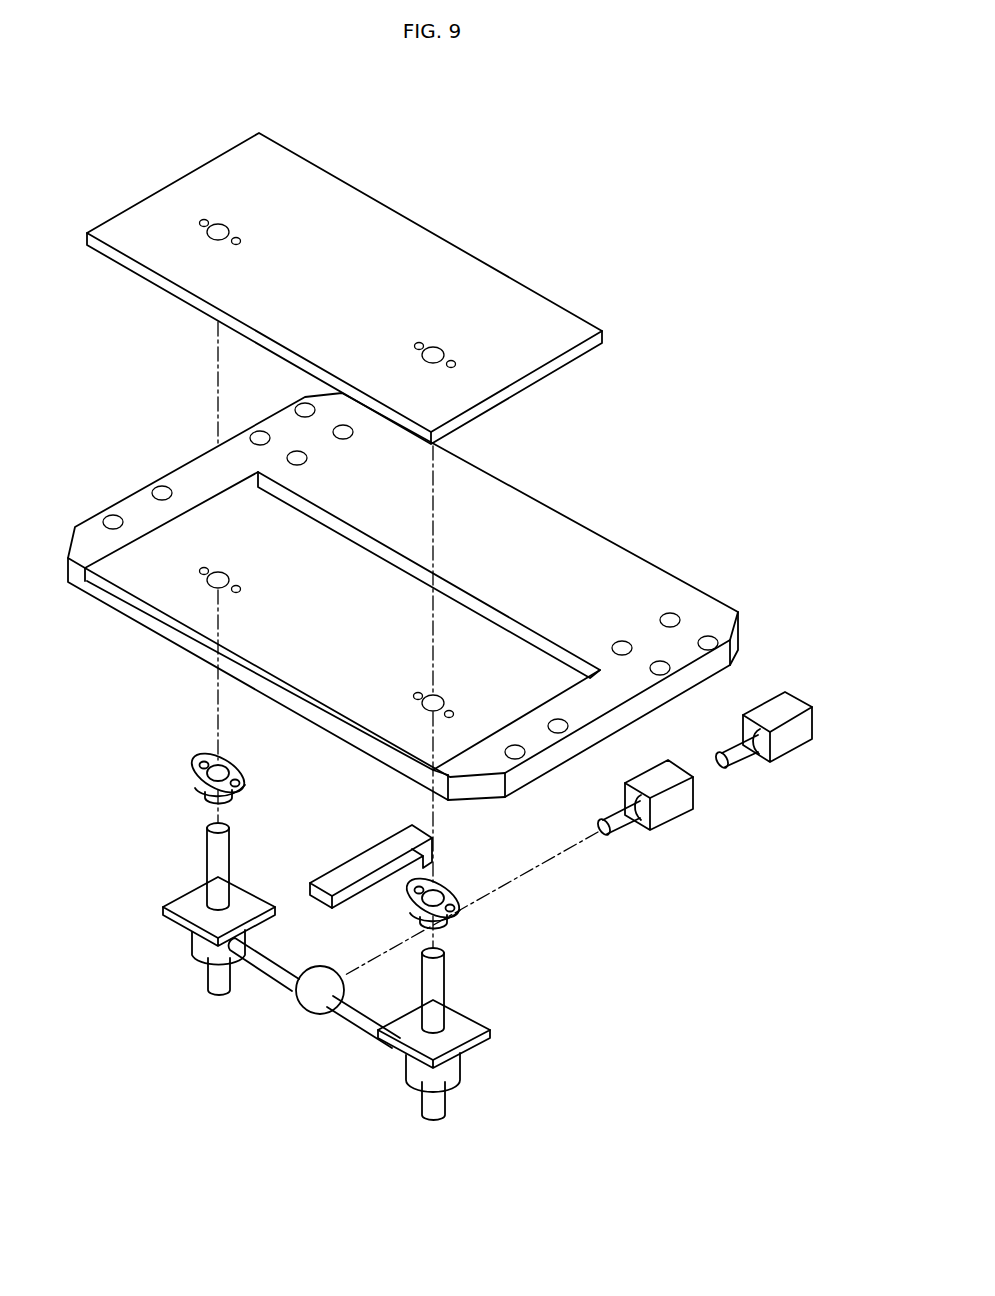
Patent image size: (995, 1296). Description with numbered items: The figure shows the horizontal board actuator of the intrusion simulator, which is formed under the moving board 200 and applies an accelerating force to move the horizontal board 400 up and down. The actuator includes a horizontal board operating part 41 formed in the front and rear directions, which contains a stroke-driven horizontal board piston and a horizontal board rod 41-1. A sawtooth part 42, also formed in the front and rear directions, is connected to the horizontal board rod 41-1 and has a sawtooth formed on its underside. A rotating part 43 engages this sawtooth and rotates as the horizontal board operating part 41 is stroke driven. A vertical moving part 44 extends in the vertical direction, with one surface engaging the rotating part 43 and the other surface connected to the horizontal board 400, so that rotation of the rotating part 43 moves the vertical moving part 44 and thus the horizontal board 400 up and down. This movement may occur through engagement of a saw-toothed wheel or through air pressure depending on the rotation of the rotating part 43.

The horizontal board 400 is at (418, 245).
The moving board 200 is at (588, 562).
The horizontal board operating part 41 is at (673, 806).
The horizontal board rod 41-1 is at (623, 816).
The sawtooth part 42 is at (360, 867).
The rotating part 43 is at (322, 997).
The vertical moving part 44 is at (447, 978).